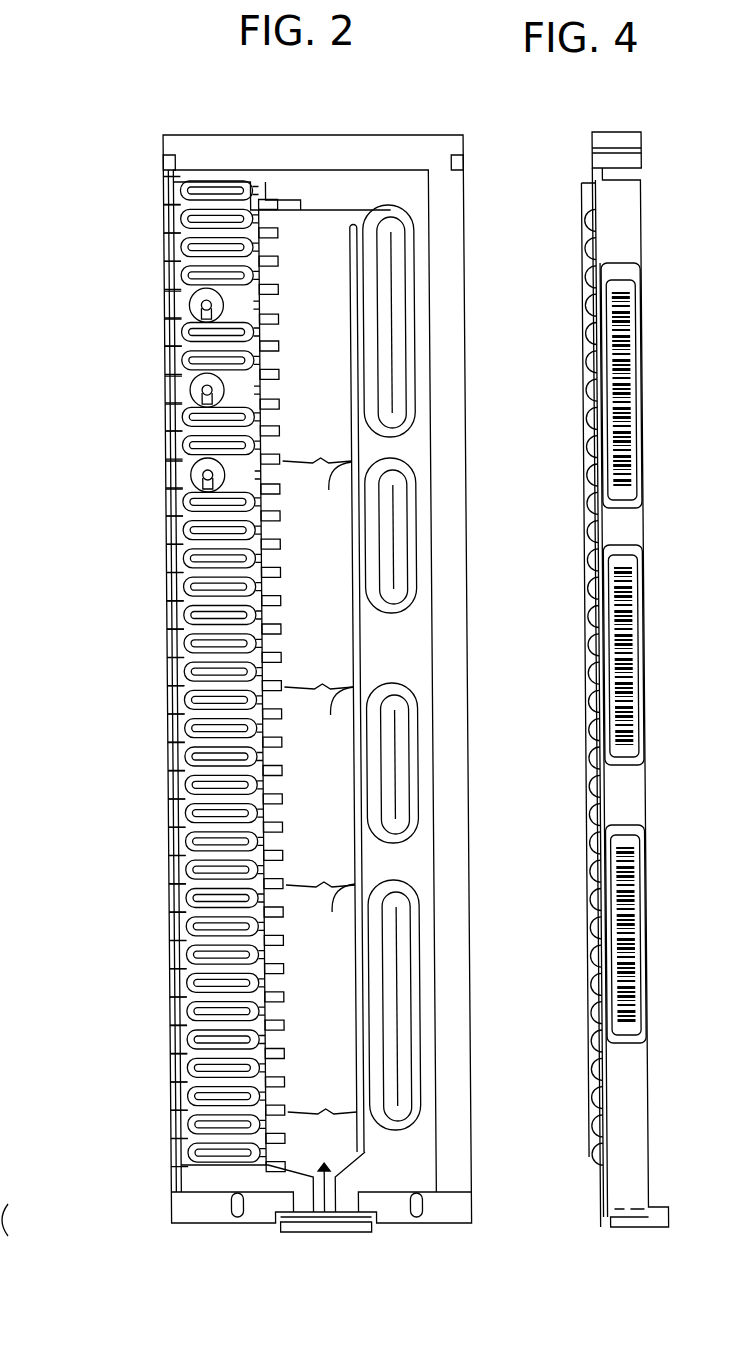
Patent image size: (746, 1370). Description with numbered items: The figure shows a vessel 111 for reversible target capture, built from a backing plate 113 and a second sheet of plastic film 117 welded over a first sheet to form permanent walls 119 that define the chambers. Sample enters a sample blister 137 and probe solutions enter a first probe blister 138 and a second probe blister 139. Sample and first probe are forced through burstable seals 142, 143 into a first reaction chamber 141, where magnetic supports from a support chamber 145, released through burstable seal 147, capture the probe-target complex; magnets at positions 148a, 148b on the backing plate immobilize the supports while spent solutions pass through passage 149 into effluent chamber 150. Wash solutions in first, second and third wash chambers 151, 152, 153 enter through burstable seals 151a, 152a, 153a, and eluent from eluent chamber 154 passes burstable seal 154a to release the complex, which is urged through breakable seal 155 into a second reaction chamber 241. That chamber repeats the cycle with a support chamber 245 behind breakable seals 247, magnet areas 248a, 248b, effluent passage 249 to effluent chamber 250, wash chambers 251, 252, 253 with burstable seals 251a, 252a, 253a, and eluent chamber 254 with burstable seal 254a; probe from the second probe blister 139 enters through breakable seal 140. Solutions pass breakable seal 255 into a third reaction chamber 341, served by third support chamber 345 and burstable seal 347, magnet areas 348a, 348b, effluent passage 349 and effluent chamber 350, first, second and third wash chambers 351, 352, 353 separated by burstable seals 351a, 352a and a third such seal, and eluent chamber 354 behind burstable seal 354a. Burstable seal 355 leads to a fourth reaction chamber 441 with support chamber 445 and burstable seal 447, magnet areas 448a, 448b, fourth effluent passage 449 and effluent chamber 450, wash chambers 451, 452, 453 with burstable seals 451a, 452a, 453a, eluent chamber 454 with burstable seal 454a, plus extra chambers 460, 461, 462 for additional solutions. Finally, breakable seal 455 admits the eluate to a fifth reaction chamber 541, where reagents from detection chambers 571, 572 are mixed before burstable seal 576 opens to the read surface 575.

In FIG. 2, the vessel 111 is at (467, 1224).
In FIG. 4, the vessel 111 is at (637, 1193).
In FIG. 2, the backing plate 113 is at (456, 190).
In FIG. 2, the second sheet of plastic film 117 is at (350, 215).
In FIG. 2, the permanent walls 119 is at (336, 215).
In FIG. 2, the sample blister 137 is at (200, 405).
In FIG. 2, the first probe blister 138 is at (205, 322).
In FIG. 2, the second probe blister 139 is at (205, 500).
In FIG. 2, the breakable seal 140 is at (400, 540).
In FIG. 2, the first reaction chamber 141 is at (400, 405).
In FIG. 2, the burstable seal 142 is at (342, 440).
In FIG. 2, the burstable seal 143 is at (342, 352).
In FIG. 2, the support chamber 145 is at (185, 225).
In FIG. 2, the burstable seal 147 is at (250, 200).
In FIG. 2, the magnet position 148a is at (342, 325).
In FIG. 2, the magnet position 148b is at (342, 402).
In FIG. 2, the passage 149 is at (365, 215).
In FIG. 2, the effluent chamber 150 is at (345, 215).
In FIG. 2, the first wash chamber 151 is at (258, 250).
In FIG. 2, the burstable seal 151a is at (296, 208).
In FIG. 2, the second wash chamber 152 is at (258, 290).
In FIG. 2, the burstable seal 152a is at (342, 300).
In FIG. 2, the third wash chamber 153 is at (258, 368).
In FIG. 2, the burstable seal 153a is at (342, 380).
In FIG. 2, the eluent chamber 154 is at (258, 450).
In FIG. 2, the burstable seal 154a is at (240, 480).
In FIG. 2, the breakable seal 155 is at (342, 520).
In FIG. 2, the second reaction chamber 241 is at (400, 590).
In FIG. 2, the support chamber 245 is at (258, 546).
In FIG. 2, the breakable seals 247 is at (276, 578).
In FIG. 2, the magnet area 248a is at (342, 606).
In FIG. 2, the magnet area 248b is at (342, 640).
In FIG. 2, the effluent passage 249 is at (350, 466).
In FIG. 2, the effluent chamber 250 is at (342, 562).
In FIG. 2, the first wash chamber 251 is at (258, 592).
In FIG. 2, the burstable seal 251a is at (258, 622).
In FIG. 2, the second wash chamber 252 is at (258, 640).
In FIG. 2, the burstable seal 252a is at (258, 663).
In FIG. 2, the third wash chamber 253 is at (258, 673).
In FIG. 2, the burstable seal 253a is at (342, 667).
In FIG. 2, the eluent chamber 254 is at (258, 698).
In FIG. 2, the burstable seal 254a is at (342, 692).
In FIG. 2, the breakable seal 255 is at (400, 735).
In FIG. 2, the third reaction chamber 341 is at (400, 780).
In FIG. 2, the third support chamber 345 is at (258, 720).
In FIG. 2, the burstable seal 347 is at (262, 730).
In FIG. 2, the magnet area 348a is at (342, 803).
In FIG. 2, the magnet area 348b is at (342, 832).
In FIG. 2, the effluent passage 349 is at (350, 690).
In FIG. 2, the effluent chamber 350 is at (342, 760).
In FIG. 2, the first wash chamber 351 is at (258, 735).
In FIG. 2, the burstable seal 351a is at (260, 758).
In FIG. 2, the second wash chamber 352 is at (258, 783).
In FIG. 2, the burstable seal 352a is at (260, 795).
In FIG. 2, the third wash chamber 353 is at (258, 800).
In FIG. 2, the eluent chamber 354 is at (258, 822).
In FIG. 2, the burstable seal 354a is at (258, 853).
In FIG. 2, the burstable seal 355 is at (342, 878).
In FIG. 2, the fourth reaction chamber 441 is at (400, 985).
In FIG. 2, the support chamber 445 is at (258, 888).
In FIG. 2, the burstable seal 447 is at (342, 905).
In FIG. 2, the magnet area 448a is at (342, 1025).
In FIG. 2, the magnet area 448b is at (342, 1078).
In FIG. 2, the fourth effluent passage 449 is at (350, 884).
In FIG. 2, the effluent chamber 450 is at (342, 930).
In FIG. 2, the wash chamber 451 is at (258, 932).
In FIG. 2, the burstable seal 451a is at (342, 950).
In FIG. 2, the wash chamber 452 is at (258, 958).
In FIG. 2, the burstable seal 452a is at (342, 1000).
In FIG. 2, the wash chamber 453 is at (258, 983).
In FIG. 2, the burstable seal 453a is at (342, 1050).
In FIG. 2, the eluent chamber 454 is at (258, 1016).
In FIG. 2, the burstable seal 454a is at (342, 1100).
In FIG. 2, the breakable seal 455 is at (342, 1130).
In FIG. 2, the extra chamber 460 is at (258, 1053).
In FIG. 2, the extra chamber 461 is at (258, 1088).
In FIG. 2, the extra chamber 462 is at (258, 1133).
In FIG. 2, the fifth reaction chamber 541 is at (345, 1160).
In FIG. 2, the detection chamber 571 is at (258, 1160).
In FIG. 2, the detection chamber 572 is at (258, 1190).
In FIG. 2, the read surface 575 is at (328, 1212).
In FIG. 2, the burstable seal 576 is at (330, 1178).